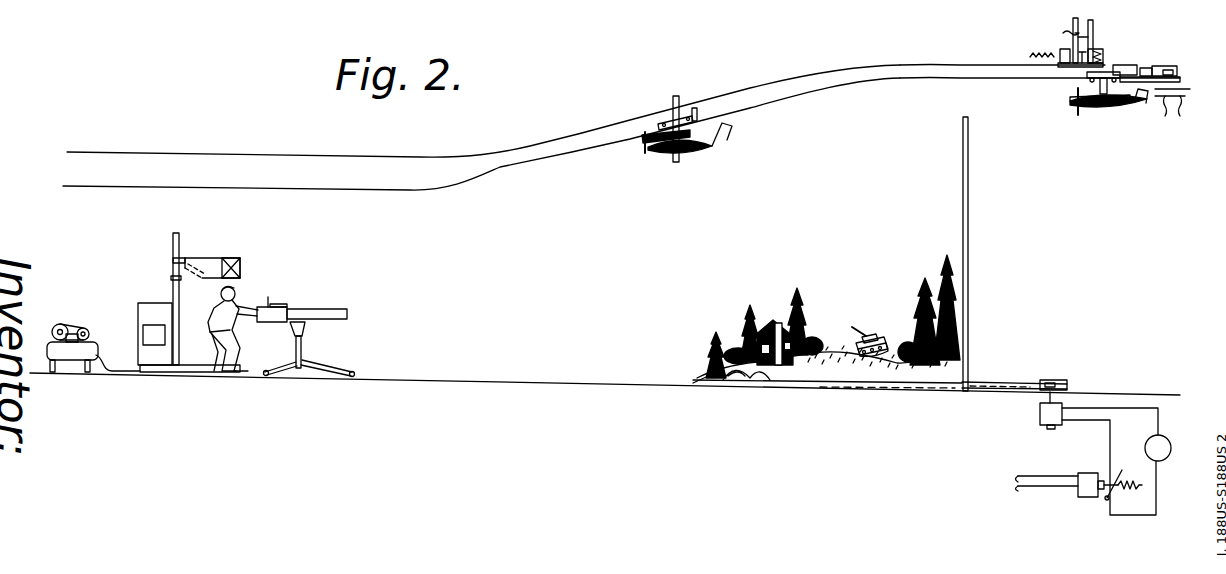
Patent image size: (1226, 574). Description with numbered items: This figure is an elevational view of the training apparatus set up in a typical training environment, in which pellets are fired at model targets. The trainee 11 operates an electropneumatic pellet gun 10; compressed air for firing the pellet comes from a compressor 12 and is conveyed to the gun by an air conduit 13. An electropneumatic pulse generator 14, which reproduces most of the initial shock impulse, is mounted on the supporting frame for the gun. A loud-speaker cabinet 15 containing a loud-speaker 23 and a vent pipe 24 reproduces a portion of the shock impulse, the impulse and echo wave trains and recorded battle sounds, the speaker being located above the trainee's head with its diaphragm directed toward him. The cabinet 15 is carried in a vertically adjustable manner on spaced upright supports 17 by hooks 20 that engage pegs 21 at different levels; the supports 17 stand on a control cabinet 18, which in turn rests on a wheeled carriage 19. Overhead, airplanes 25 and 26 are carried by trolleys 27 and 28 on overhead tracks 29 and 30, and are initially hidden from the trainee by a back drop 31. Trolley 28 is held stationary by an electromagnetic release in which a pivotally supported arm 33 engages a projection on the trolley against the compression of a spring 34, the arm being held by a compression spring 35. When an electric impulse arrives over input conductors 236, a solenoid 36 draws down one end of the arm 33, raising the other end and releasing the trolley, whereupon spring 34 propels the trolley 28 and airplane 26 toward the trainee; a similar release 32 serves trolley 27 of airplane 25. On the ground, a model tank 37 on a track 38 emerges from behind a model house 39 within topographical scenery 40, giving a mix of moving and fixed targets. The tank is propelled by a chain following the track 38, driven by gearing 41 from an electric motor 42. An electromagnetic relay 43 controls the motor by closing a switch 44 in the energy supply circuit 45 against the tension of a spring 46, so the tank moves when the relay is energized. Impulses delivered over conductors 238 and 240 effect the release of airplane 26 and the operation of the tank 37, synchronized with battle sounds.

The electropneumatic pellet gun 10 is at (336, 310).
The trainee 11 is at (235, 299).
The compressor 12 is at (92, 337).
The air conduit 13 is at (299, 375).
The electropneumatic pulse generator 14 is at (280, 305).
The loud-speaker cabinet 15 is at (203, 257).
The upright supports 17 is at (180, 305).
The control cabinet 18 is at (143, 315).
The wheeled carriage 19 is at (195, 374).
The hooks 20 is at (188, 258).
The pegs 21 is at (172, 278).
The loud-speaker 23 is at (245, 264).
The vent pipe 24 is at (172, 266).
The airplane 25 is at (666, 158).
The airplane 26 is at (1110, 106).
The trolley 27 is at (675, 100).
The trolley 28 is at (1104, 73).
The overhead track 29 is at (810, 94).
The overhead track 30 is at (943, 79).
The back drop 31 is at (969, 208).
The release 32 is at (1047, 48).
The pivotally supported arm 33 is at (1150, 66).
The spring 34 is at (1122, 82).
The compression spring 35 is at (1190, 67).
The solenoid 36 is at (1166, 66).
The model tank 37 is at (877, 335).
The track 38 is at (800, 374).
The model house 39 is at (766, 323).
The topographical scenery 40 is at (926, 300).
The gearing 41 is at (1068, 383).
The electric motor 42 is at (1040, 415).
The electromagnetic relay 43 is at (1082, 497).
The switch 44 is at (1113, 478).
The energy supply circuit 45 is at (1108, 441).
The spring 46 is at (1118, 490).
The input conductors 236 is at (1063, 33).
The conductors 238 is at (1169, 118).
The conductors 240 is at (1045, 468).